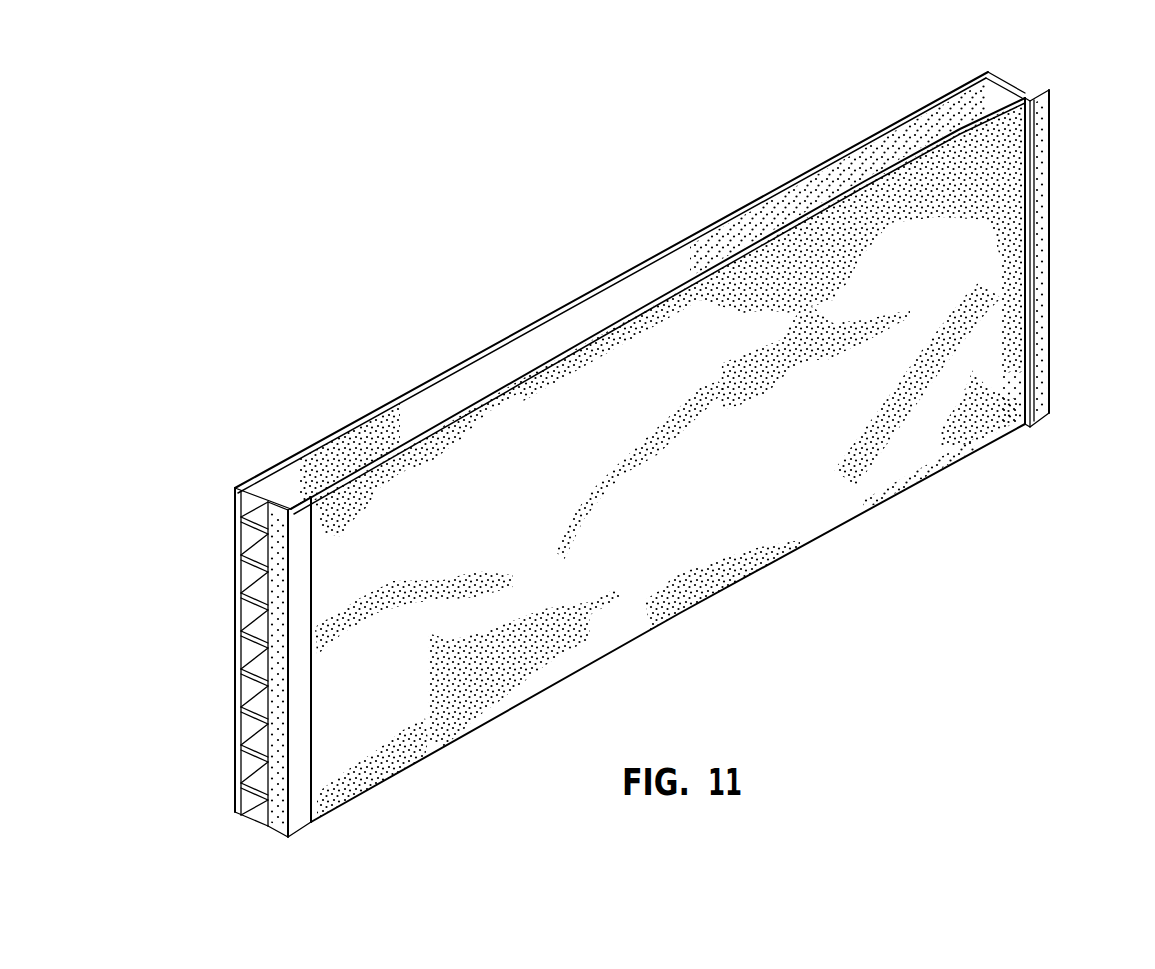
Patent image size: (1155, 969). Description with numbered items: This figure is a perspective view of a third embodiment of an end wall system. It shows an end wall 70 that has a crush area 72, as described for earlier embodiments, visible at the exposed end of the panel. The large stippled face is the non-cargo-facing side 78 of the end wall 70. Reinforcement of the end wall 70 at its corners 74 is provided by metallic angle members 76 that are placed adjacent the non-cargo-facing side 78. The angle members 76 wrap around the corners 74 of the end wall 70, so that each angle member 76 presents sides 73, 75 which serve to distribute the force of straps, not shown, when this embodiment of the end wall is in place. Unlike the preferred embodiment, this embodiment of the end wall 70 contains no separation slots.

The end wall 70 is at (765, 555).
The crush area 72 is at (250, 630).
The side of angle member 73 is at (282, 808).
The corners 74 is at (1030, 92).
The side of angle member 75 is at (300, 775).
The metallic angle members 76 is at (277, 586).
The non-cargo-facing side 78 is at (538, 488).